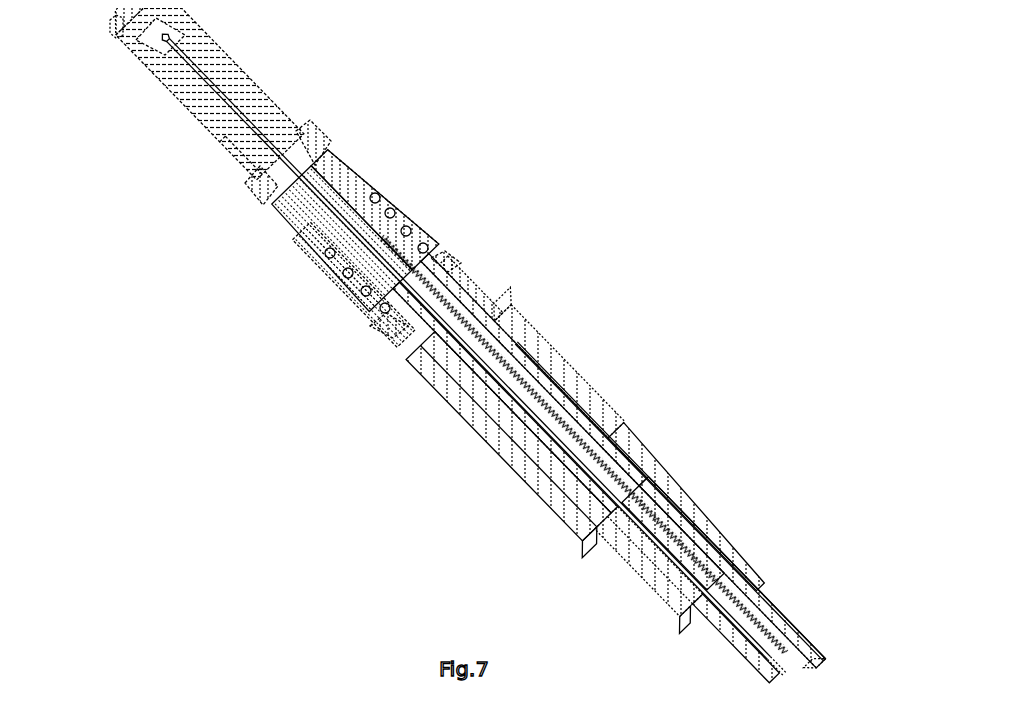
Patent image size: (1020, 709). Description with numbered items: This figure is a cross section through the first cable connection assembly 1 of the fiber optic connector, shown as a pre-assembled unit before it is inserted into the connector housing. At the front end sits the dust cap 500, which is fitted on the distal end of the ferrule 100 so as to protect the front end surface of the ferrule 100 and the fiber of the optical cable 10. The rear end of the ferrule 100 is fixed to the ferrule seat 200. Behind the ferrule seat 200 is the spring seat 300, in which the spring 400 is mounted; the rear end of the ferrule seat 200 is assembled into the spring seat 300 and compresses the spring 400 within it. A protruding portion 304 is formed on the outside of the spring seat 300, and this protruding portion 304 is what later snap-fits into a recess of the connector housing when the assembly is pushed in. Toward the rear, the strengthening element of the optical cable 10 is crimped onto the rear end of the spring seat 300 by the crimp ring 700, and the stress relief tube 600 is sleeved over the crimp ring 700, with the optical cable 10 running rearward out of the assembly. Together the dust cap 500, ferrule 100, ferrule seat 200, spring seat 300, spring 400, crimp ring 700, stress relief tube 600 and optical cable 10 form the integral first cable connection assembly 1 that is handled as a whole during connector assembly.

The first cable connection assembly 1 is at (338, 347).
The optical cable 10 is at (750, 592).
The ferrule 100 is at (237, 138).
The ferrule seat 200 is at (315, 123).
The spring seat 300 is at (410, 212).
The protruding portion 304 is at (447, 248).
The spring 400 is at (332, 273).
The dust cap 500 is at (213, 45).
The stress relief tube 600 is at (583, 383).
The crimp ring 700 is at (443, 380).